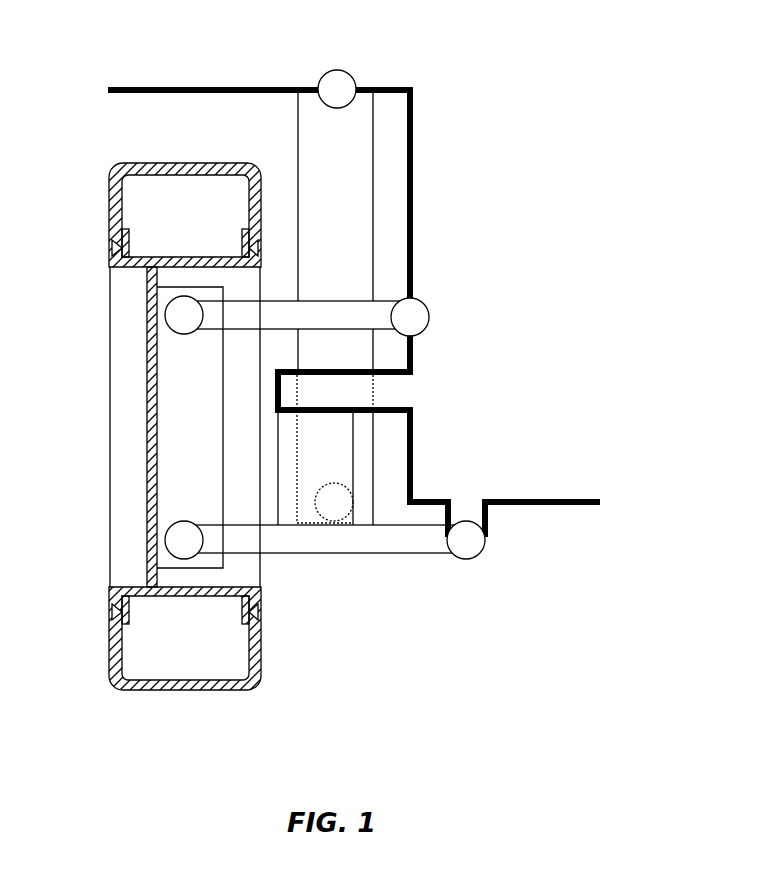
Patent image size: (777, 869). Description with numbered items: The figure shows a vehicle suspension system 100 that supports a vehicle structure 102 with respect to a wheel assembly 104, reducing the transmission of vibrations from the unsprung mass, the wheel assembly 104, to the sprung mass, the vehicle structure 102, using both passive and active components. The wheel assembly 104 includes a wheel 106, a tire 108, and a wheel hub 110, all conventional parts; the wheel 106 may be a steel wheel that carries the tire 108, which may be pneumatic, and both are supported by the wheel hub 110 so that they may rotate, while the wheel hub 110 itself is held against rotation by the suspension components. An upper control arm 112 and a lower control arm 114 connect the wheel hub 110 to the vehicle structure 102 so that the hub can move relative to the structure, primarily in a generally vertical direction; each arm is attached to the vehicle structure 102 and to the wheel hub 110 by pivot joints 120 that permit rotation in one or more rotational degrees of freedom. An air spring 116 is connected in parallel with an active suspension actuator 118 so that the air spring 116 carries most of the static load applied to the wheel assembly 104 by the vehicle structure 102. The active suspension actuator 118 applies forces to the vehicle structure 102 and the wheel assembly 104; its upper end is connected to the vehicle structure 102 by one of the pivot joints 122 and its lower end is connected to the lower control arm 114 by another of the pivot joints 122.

The vehicle suspension system 100 is at (394, 144).
The vehicle structure 102 is at (152, 87).
The wheel assembly 104 is at (103, 181).
The wheel 106 is at (147, 370).
The tire 108 is at (109, 219).
The wheel hub 110 is at (177, 427).
The upper control arm 112 is at (385, 300).
The lower control arm 114 is at (405, 555).
The air spring 116 is at (353, 453).
The active suspension actuator 118 is at (373, 221).
The pivot joints 120 is at (165, 312).
The pivot joints 122 is at (340, 69).